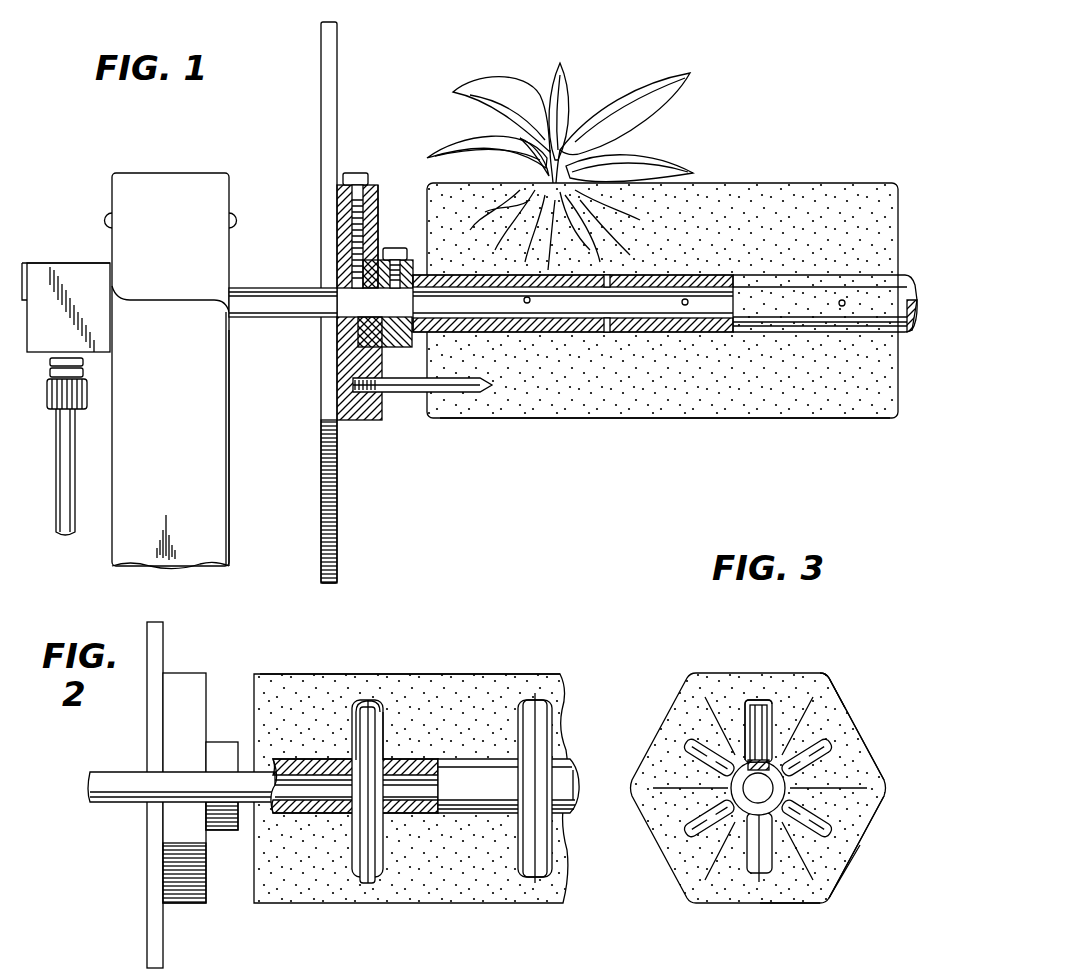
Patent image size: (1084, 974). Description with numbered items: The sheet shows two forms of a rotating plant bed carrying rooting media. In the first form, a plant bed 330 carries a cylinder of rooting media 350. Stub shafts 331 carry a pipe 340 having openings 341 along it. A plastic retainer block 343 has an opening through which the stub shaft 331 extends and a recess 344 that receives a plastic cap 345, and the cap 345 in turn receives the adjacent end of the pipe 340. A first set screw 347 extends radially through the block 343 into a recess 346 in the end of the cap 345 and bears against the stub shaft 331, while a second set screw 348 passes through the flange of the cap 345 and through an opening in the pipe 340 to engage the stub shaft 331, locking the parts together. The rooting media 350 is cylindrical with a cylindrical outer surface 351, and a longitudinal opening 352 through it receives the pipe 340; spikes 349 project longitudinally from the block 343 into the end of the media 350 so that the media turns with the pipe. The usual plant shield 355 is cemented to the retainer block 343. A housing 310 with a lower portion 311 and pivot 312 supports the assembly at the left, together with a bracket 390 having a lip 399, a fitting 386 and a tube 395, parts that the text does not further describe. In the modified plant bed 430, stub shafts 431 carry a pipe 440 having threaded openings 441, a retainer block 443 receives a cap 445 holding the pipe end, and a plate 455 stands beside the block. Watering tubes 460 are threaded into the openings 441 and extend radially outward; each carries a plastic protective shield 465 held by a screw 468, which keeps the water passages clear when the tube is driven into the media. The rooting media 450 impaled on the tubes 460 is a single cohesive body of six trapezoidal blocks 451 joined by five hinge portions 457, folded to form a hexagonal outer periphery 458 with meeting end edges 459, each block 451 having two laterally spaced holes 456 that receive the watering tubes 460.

In FIG. 1, the housing 310 is at (156, 173).
In FIG. 1, the housing lower portion 311 is at (215, 486).
In FIG. 1, the pivot pin 312 is at (107, 213).
In FIG. 1, the plant bed 330 is at (763, 81).
In FIG. 1, the stub shaft 331 is at (262, 290).
In FIG. 1, the pipe 340 is at (683, 334).
In FIG. 1, the openings 341 is at (688, 299).
In FIG. 1, the retainer block 343 is at (384, 245).
In FIG. 1, the recess 344 is at (395, 259).
In FIG. 1, the cap 345 is at (338, 374).
In FIG. 1, the recess 346 is at (345, 275).
In FIG. 1, the first set screw 347 is at (356, 173).
In FIG. 1, the second set screw 348 is at (395, 248).
In FIG. 1, the spikes 349 is at (410, 394).
In FIG. 1, the rooting media 350 is at (543, 398).
In FIG. 1, the cylindrical outer surface 351 is at (725, 419).
In FIG. 1, the opening 352 is at (832, 333).
In FIG. 1, the plant shield 355 is at (333, 62).
In FIG. 1, the fitting 386 is at (52, 395).
In FIG. 1, the bracket 390 is at (78, 268).
In FIG. 1, the tube 395 is at (62, 535).
In FIG. 1, the bracket lip 399 is at (50, 263).
In FIG. 2, the plant bed 430 is at (488, 662).
In FIG. 2, the stub shaft 431 is at (106, 802).
In FIG. 2, the pipe 440 is at (576, 812).
In FIG. 3, the pipe 440 is at (766, 797).
In FIG. 2, the threaded openings 441 is at (362, 775).
In FIG. 2, the retainer block 443 is at (183, 682).
In FIG. 2, the cap 445 is at (220, 742).
In FIG. 2, the rooting media 450 is at (471, 885).
In FIG. 3, the rooting media 450 is at (694, 663).
In FIG. 2, the blocks 451 is at (420, 673).
In FIG. 3, the blocks 451 is at (823, 713).
In FIG. 2, the plate 455 is at (158, 636).
In FIG. 2, the holes 456 is at (380, 760).
In FIG. 3, the holes 456 is at (836, 746).
In FIG. 2, the hinge portions 457 is at (625, 792).
In FIG. 3, the hinge portions 457 is at (883, 786).
In FIG. 3, the hexagonal outer periphery 458 is at (853, 848).
In FIG. 3, the end edges 459 is at (822, 675).
In FIG. 2, the watering tubes 460 is at (375, 707).
In FIG. 3, the watering tubes 460 is at (772, 762).
In FIG. 2, the protective shield 465 is at (356, 730).
In FIG. 3, the protective shield 465 is at (745, 718).
In FIG. 2, the screw 468 is at (366, 702).
In FIG. 3, the screw 468 is at (758, 700).